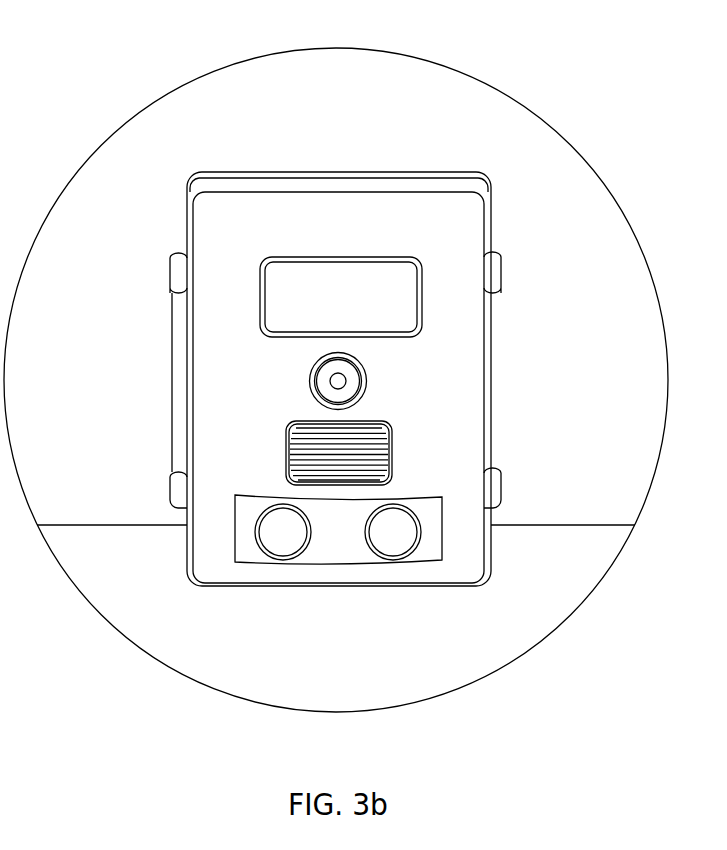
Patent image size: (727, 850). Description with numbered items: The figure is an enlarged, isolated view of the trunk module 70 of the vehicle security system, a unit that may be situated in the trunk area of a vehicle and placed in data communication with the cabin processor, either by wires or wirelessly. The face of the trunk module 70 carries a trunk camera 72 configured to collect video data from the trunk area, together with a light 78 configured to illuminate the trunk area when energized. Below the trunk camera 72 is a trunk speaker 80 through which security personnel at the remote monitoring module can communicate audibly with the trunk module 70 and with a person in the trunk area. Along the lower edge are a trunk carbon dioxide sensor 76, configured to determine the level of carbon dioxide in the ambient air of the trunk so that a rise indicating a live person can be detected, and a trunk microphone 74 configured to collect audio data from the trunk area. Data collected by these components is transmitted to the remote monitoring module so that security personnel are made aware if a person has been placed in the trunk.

The trunk module 70 is at (335, 298).
The trunk camera 72 is at (367, 381).
The trunk microphone 74 is at (413, 572).
The trunk carbon dioxide sensor 76 is at (264, 571).
The light 78 is at (465, 245).
The trunk speaker 80 is at (392, 447).